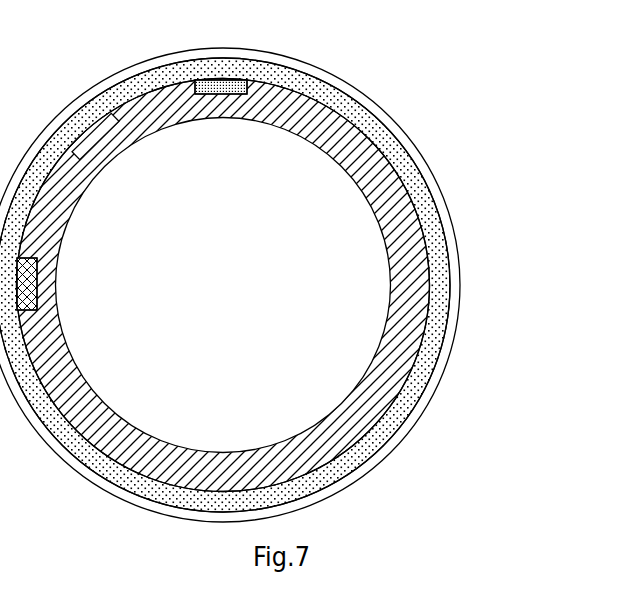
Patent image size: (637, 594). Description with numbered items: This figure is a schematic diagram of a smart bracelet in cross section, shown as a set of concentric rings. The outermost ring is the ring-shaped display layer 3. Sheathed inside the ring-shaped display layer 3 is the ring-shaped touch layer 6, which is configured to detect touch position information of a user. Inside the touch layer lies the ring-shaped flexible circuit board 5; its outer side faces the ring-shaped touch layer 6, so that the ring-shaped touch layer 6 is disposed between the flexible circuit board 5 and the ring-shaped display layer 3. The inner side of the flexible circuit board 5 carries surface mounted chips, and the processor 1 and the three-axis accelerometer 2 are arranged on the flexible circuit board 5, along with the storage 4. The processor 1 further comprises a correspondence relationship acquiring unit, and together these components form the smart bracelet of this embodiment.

The processor 1 is at (97, 139).
The three-axis accelerometer 2 is at (36, 283).
The ring-shaped display layer 3 is at (438, 203).
The storage 4 is at (203, 80).
The flexible circuit board 5 is at (403, 380).
The ring-shaped touch layer 6 is at (443, 275).